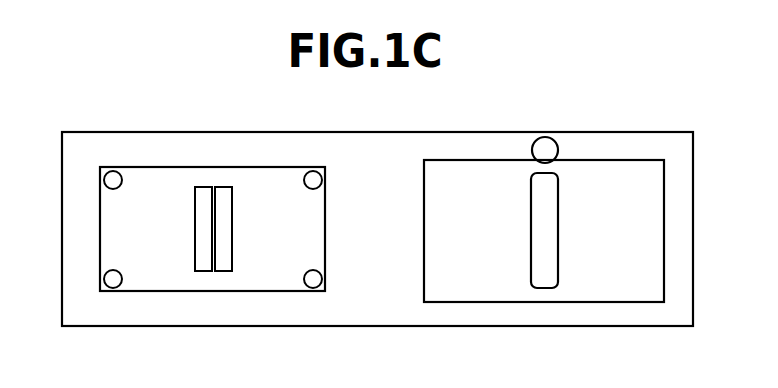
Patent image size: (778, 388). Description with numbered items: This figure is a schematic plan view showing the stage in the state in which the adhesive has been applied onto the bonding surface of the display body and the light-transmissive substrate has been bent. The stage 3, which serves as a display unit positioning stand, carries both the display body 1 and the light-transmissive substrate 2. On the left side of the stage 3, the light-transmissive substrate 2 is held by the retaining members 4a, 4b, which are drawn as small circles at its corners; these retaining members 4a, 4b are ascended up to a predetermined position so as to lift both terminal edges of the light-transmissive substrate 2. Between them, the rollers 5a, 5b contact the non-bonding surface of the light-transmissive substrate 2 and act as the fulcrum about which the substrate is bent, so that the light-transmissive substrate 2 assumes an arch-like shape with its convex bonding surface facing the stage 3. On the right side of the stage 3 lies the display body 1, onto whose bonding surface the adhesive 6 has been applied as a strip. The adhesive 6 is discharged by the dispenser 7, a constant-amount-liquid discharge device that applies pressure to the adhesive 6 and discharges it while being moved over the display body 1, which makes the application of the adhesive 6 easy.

The display body 1 is at (627, 153).
The light-transmissive substrate 2 is at (214, 283).
The stage 3 is at (362, 326).
The retaining member 4a is at (113, 171).
The retaining member 4b is at (313, 171).
The roller 5a is at (205, 187).
The roller 5b is at (223, 187).
The adhesive 6 is at (537, 197).
The dispenser 7 is at (545, 137).